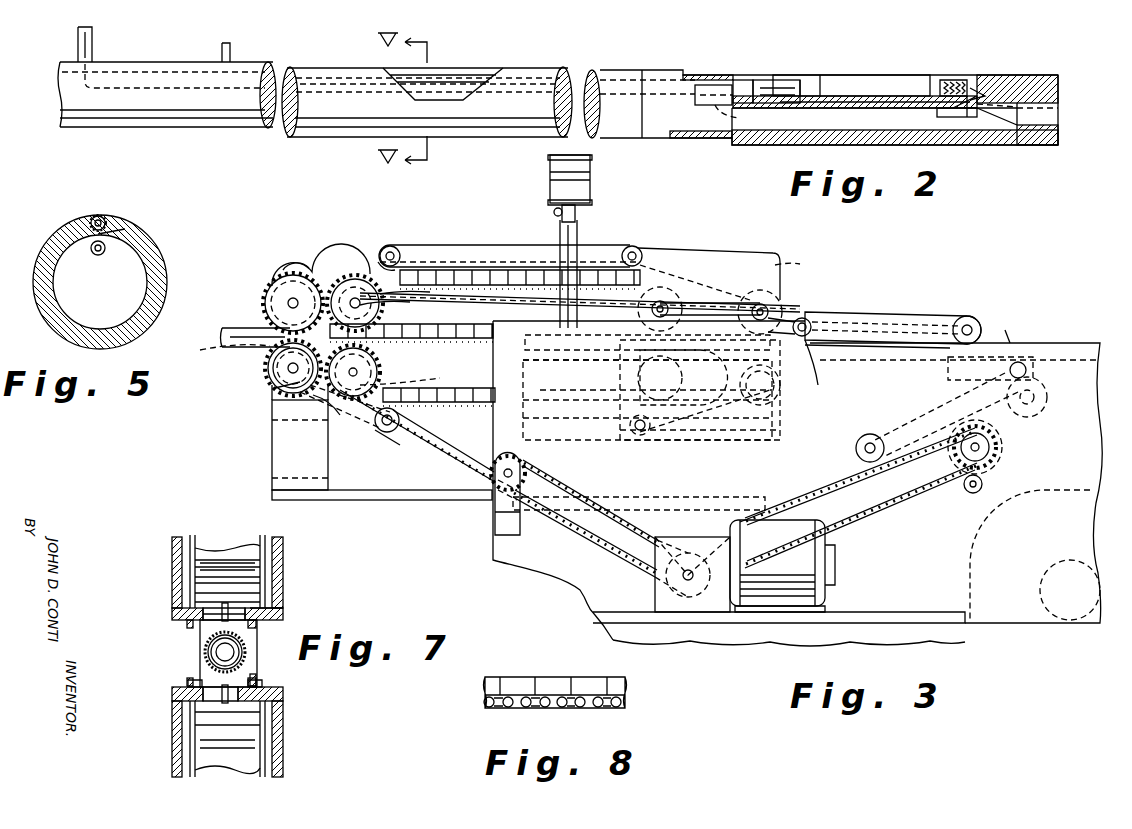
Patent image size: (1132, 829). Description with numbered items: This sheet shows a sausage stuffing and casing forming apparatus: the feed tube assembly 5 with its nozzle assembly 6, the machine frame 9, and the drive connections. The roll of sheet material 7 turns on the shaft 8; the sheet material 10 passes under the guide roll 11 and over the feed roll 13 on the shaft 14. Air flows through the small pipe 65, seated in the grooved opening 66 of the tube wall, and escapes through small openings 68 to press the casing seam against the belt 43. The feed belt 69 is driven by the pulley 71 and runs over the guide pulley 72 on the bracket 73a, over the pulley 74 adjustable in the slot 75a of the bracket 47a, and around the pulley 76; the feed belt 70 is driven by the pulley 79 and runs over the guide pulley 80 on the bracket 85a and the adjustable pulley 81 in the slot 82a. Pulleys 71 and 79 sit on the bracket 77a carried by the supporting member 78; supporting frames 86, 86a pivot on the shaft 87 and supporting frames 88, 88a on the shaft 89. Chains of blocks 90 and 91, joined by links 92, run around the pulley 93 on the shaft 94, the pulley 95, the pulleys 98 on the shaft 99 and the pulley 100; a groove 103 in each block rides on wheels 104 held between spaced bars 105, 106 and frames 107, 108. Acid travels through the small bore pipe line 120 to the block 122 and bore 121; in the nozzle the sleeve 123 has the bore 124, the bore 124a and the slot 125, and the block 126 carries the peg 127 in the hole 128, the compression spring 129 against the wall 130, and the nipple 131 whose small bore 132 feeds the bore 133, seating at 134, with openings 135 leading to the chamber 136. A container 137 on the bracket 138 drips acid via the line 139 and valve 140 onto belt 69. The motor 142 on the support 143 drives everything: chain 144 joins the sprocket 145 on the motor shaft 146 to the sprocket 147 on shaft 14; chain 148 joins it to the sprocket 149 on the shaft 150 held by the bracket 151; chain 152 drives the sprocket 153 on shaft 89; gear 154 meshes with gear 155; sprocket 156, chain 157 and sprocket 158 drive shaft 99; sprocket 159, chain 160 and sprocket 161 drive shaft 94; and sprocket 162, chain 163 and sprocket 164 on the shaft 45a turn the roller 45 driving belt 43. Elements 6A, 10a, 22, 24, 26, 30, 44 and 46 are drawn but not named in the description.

In FIG. 2, the feed tube assembly 5 is at (166, 62).
In FIG. 5, the feed tube assembly 5 is at (162, 262).
In FIG. 3, the feed tube assembly 5 is at (1062, 344).
In FIG. 2, the nozzle assembly 6 is at (986, 50).
In FIG. 3, the nozzle assembly 6 is at (568, 350).
In FIG. 7, the nozzle assembly 6 is at (243, 662).
In FIG. 2, the pin 6A is at (232, 56).
In FIG. 3, the roll of sheet material 7 is at (970, 553).
In FIG. 3, the shaft 8 is at (1052, 565).
In FIG. 3, the machine frame 9 is at (860, 408).
In FIG. 3, the sheet material 10 is at (903, 436).
In FIG. 3, the support bar 10a is at (230, 332).
In FIG. 3, the guide roll 11 is at (968, 494).
In FIG. 3, the feed roll 13 is at (995, 460).
In FIG. 3, the shaft 14 is at (994, 446).
In FIG. 3, the roller outline 22 is at (1040, 410).
In FIG. 3, the roller pin 24 is at (1036, 398).
In FIG. 3, the pivot pin 26 is at (1030, 364).
In FIG. 3, the tube guide assembly 30 is at (1016, 327).
In FIG. 3, the belt 43 is at (880, 314).
In FIG. 3, the arm pivot 44 is at (982, 318).
In FIG. 3, the roller 45 is at (825, 314).
In FIG. 3, the shaft 45a is at (815, 326).
In FIG. 3, the arm link 46 is at (935, 316).
In FIG. 3, the bracket 47a is at (692, 254).
In FIG. 2, the small pipe 65 is at (270, 72).
In FIG. 5, the small pipe 65 is at (110, 229).
In FIG. 5, the grooved opening 66 is at (96, 215).
In FIG. 2, the small openings 68 is at (500, 68).
In FIG. 5, the small openings 68 is at (102, 216).
In FIG. 3, the feed belt 69 is at (462, 244).
In FIG. 7, the feed belt 69 is at (245, 645).
In FIG. 7, the feed belt 70 is at (258, 680).
In FIG. 3, the pulley 71 is at (264, 302).
In FIG. 3, the guide pulley 72 is at (394, 246).
In FIG. 3, the bracket 73a is at (380, 255).
In FIG. 3, the pulley 74 is at (626, 246).
In FIG. 3, the slot 75a is at (762, 290).
In FIG. 3, the pulley 76 is at (800, 318).
In FIG. 3, the bracket 77a is at (272, 462).
In FIG. 3, the supporting member 78 is at (395, 500).
In FIG. 3, the pulley 79 is at (232, 351).
In FIG. 3, the guide pulley 80 is at (392, 445).
In FIG. 3, the pulley 81 is at (645, 435).
In FIG. 3, the slot 82a is at (782, 430).
In FIG. 3, the bracket 85a is at (375, 424).
In FIG. 7, the supporting frame 86 is at (172, 568).
In FIG. 3, the supporting frame 86a is at (802, 263).
In FIG. 7, the supporting frame 86a is at (278, 562).
In FIG. 3, the shaft 87 is at (290, 300).
In FIG. 7, the supporting frame 88 is at (172, 738).
In FIG. 3, the supporting frame 88a is at (712, 398).
In FIG. 7, the supporting frame 88a is at (278, 730).
In FIG. 3, the shaft 89 is at (275, 378).
In FIG. 3, the blocks 90 is at (523, 318).
In FIG. 7, the blocks 90 is at (210, 633).
In FIG. 8, the blocks 90 is at (580, 680).
In FIG. 3, the blocks 91 is at (468, 402).
In FIG. 7, the blocks 91 is at (208, 656).
In FIG. 7, the links 92 is at (186, 680).
In FIG. 8, the links 92 is at (575, 708).
In FIG. 3, the pulley 93 is at (408, 264).
In FIG. 3, the shaft 94 is at (382, 300).
In FIG. 3, the pulley 95 is at (638, 312).
In FIG. 7, the pulley 95 is at (232, 550).
In FIG. 3, the pulley 98 is at (412, 375).
In FIG. 3, the shaft 99 is at (360, 372).
In FIG. 3, the pulley 100 is at (635, 370).
In FIG. 7, the pulley 100 is at (272, 760).
In FIG. 7, the groove 103 is at (226, 700).
In FIG. 7, the wheels 104 is at (226, 725).
In FIG. 7, the spaced bar 105 is at (185, 608).
In FIG. 7, the spaced bar 106 is at (283, 610).
In FIG. 7, the frame 107 is at (172, 692).
In FIG. 7, the frame 108 is at (283, 694).
In FIG. 2, the small bore pipe line 120 is at (142, 88).
In FIG. 5, the small bore pipe line 120 is at (103, 254).
In FIG. 2, the bore 121 is at (718, 74).
In FIG. 2, the block 122 is at (702, 106).
In FIG. 2, the sleeve 123 is at (808, 136).
In FIG. 2, the bore 124 is at (885, 128).
In FIG. 2, the bore 124a is at (960, 80).
In FIG. 2, the slot 125 is at (868, 76).
In FIG. 2, the block 126 is at (948, 80).
In FIG. 2, the peg 127 is at (973, 84).
In FIG. 2, the hole 128 is at (995, 76).
In FIG. 2, the compression spring 129 is at (942, 113).
In FIG. 2, the wall 130 is at (968, 112).
In FIG. 2, the nipple 131 is at (768, 80).
In FIG. 2, the small bore 132 is at (740, 80).
In FIG. 2, the small bore 133 is at (815, 96).
In FIG. 2, the seat 134 is at (737, 114).
In FIG. 2, the small openings 135 is at (868, 78).
In FIG. 2, the chamber 136 is at (886, 76).
In FIG. 3, the container 137 is at (590, 182).
In FIG. 3, the bracket 138 is at (578, 262).
In FIG. 3, the line 139 is at (578, 214).
In FIG. 3, the valve 140 is at (553, 212).
In FIG. 3, the motor 142 is at (812, 572).
In FIG. 3, the support 143 is at (740, 625).
In FIG. 3, the chain 144 is at (792, 512).
In FIG. 3, the sprocket 145 is at (650, 570).
In FIG. 3, the motor shaft 146 is at (692, 570).
In FIG. 3, the sprocket 147 is at (920, 452).
In FIG. 3, the chain 148 is at (595, 497).
In FIG. 3, the sprocket 149 is at (540, 480).
In FIG. 3, the shaft 150 is at (512, 472).
In FIG. 3, the bracket 151 is at (496, 500).
In FIG. 3, the chain 152 is at (438, 470).
In FIG. 3, the sprocket 153 is at (285, 390).
In FIG. 3, the gear 154 is at (270, 362).
In FIG. 3, the gear 155 is at (270, 292).
In FIG. 3, the sprocket 156 is at (312, 402).
In FIG. 3, the chain 157 is at (375, 436).
In FIG. 3, the sprocket 158 is at (325, 398).
In FIG. 3, the sprocket 159 is at (332, 280).
In FIG. 3, the chain 160 is at (318, 275).
In FIG. 3, the sprocket 161 is at (350, 280).
In FIG. 3, the sprocket 162 is at (400, 292).
In FIG. 3, the chain 163 is at (462, 298).
In FIG. 3, the sprocket 164 is at (822, 362).